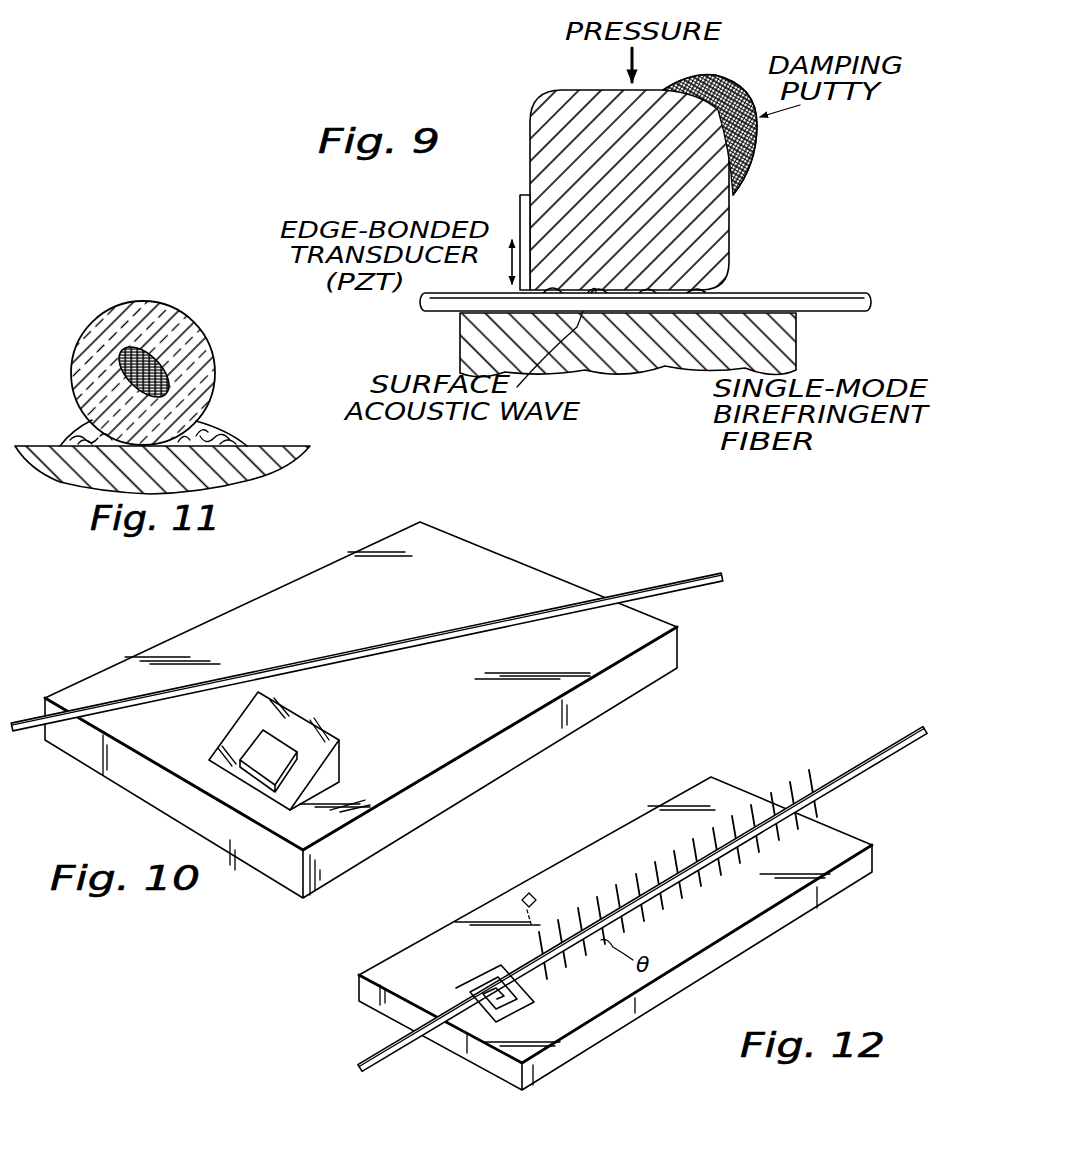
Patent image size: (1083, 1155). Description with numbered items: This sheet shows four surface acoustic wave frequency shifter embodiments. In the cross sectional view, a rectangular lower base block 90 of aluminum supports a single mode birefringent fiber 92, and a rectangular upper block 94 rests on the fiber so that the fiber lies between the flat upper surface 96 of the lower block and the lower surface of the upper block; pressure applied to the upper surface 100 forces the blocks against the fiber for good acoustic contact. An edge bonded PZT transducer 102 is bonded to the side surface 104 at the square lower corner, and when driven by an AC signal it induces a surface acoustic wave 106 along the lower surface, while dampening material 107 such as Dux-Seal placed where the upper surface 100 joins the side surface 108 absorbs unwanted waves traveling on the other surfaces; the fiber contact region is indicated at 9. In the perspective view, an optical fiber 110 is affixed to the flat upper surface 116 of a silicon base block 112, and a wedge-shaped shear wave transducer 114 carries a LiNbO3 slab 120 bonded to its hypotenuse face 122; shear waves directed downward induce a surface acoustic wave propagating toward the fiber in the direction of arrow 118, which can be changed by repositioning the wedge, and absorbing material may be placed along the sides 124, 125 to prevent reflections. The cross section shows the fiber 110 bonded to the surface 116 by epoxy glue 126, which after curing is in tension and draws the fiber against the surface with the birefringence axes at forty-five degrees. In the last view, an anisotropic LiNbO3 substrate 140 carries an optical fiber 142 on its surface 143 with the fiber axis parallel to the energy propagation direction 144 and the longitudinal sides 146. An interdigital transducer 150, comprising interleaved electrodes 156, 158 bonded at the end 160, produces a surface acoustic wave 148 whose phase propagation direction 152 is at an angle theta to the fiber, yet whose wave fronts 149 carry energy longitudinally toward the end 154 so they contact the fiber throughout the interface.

In FIG. 9, the fiber contact point 9 is at (700, 292).
In FIG. 9, the lower base block 90 is at (453, 348).
In FIG. 9, the single mode birefringent fiber 92 is at (837, 312).
In FIG. 9, the upper block 94 is at (736, 227).
In FIG. 9, the flat upper surface of lower block 96 is at (780, 297).
In FIG. 9, the upper surface of upper block 100 is at (582, 90).
In FIG. 9, the edge bonded PZT transducer 102 is at (517, 207).
In FIG. 9, the side surface of upper block 104 is at (529, 132).
In FIG. 9, the surface acoustic wave 106 is at (635, 287).
In FIG. 9, the dampening material 107 is at (723, 79).
In FIG. 9, the side surface of upper block 108 is at (732, 200).
In FIG. 11, the optical fiber 110 is at (141, 302).
In FIG. 10, the optical fiber 110 is at (693, 589).
In FIG. 10, the base block 112 is at (580, 715).
In FIG. 10, the shear wave transducer 114 is at (340, 763).
In FIG. 11, the flat upper surface of block 116 is at (296, 446).
In FIG. 10, the flat upper surface of block 116 is at (488, 575).
In FIG. 10, the arrow 118 is at (346, 684).
In FIG. 10, the LiNbO3 slab 120 is at (260, 736).
In FIG. 10, the hypotenuse face of wedge-shaped block 122 is at (222, 758).
In FIG. 10, the side of block 124 is at (570, 583).
In FIG. 10, the side of block 125 is at (313, 568).
In FIG. 11, the epoxy glue 126 is at (72, 440).
In FIG. 12, the substrate 140 is at (722, 958).
In FIG. 12, the optical fiber 142 is at (878, 756).
In FIG. 12, the surface of substrate 143 is at (622, 840).
In FIG. 12, the arrow (energy propagation direction) 144 is at (856, 792).
In FIG. 12, the longitudinal sides 146 is at (463, 917).
In FIG. 12, the surface acoustic wave 148 is at (710, 824).
In FIG. 12, the wave fronts 149 is at (717, 863).
In FIG. 12, the interdigital transducer 150 is at (523, 1026).
In FIG. 12, the phase propagation direction 152 is at (564, 882).
In FIG. 12, the end of substrate 154 is at (838, 854).
In FIG. 12, the electrode 156 is at (472, 977).
In FIG. 12, the electrode 158 is at (531, 1010).
In FIG. 12, the end of substrate 160 is at (516, 1049).